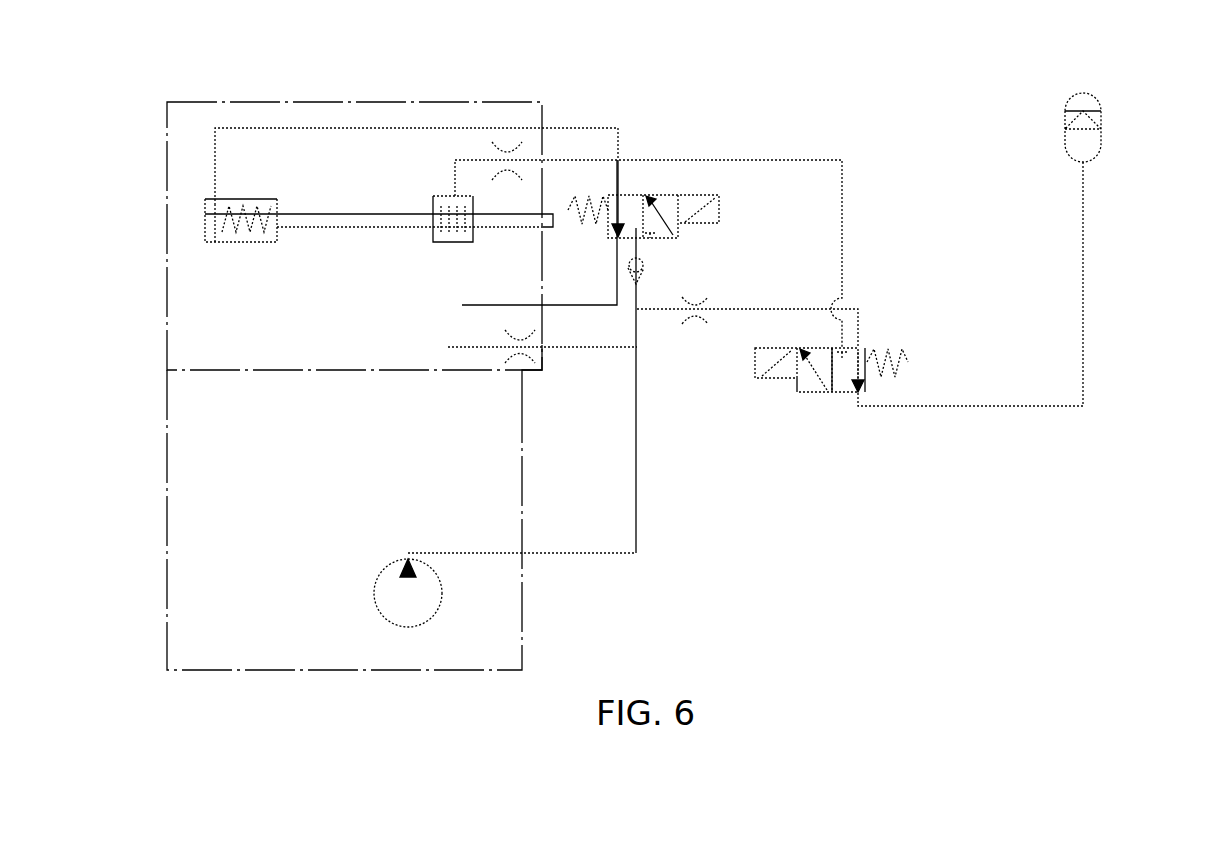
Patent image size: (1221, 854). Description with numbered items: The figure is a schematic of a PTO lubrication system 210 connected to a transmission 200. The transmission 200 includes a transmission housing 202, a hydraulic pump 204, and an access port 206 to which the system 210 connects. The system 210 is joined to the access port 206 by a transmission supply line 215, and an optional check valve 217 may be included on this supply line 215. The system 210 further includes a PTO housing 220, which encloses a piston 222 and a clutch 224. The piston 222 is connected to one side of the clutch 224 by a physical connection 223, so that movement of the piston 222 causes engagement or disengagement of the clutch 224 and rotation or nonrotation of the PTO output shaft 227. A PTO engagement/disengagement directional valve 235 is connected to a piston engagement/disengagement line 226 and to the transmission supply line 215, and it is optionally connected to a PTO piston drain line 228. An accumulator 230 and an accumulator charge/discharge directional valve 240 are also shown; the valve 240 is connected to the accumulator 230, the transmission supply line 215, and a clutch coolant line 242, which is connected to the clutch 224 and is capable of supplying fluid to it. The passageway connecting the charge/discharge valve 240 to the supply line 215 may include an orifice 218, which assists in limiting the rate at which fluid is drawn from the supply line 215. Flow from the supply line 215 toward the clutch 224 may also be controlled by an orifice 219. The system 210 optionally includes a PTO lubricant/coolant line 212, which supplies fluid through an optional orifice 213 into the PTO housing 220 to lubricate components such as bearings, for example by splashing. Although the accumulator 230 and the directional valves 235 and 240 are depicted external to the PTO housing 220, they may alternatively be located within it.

The transmission 200 is at (297, 703).
The transmission housing 202 is at (163, 487).
The hydraulic pump 204 is at (437, 615).
The access port 206 is at (534, 548).
The PTO lubrication system 210 is at (1117, 461).
The PTO lubricant/coolant line 212 is at (570, 347).
The orifice 213 is at (515, 350).
The transmission supply line 215 is at (592, 552).
The check valve 217 is at (644, 265).
The orifice 218 is at (693, 313).
The orifice 219 is at (508, 153).
The PTO housing 220 is at (163, 255).
The piston 222 is at (228, 242).
The physical connection 223 is at (335, 208).
The clutch 224 is at (447, 240).
The piston engagement/disengagement line 226 is at (280, 128).
The PTO output shaft 227 is at (508, 228).
The PTO piston drain line 228 is at (463, 307).
The accumulator 230 is at (1100, 152).
The PTO engagement/disengagement directional valve 235 is at (693, 190).
The accumulator charge/discharge directional valve 240 is at (802, 388).
The clutch coolant line 242 is at (652, 157).